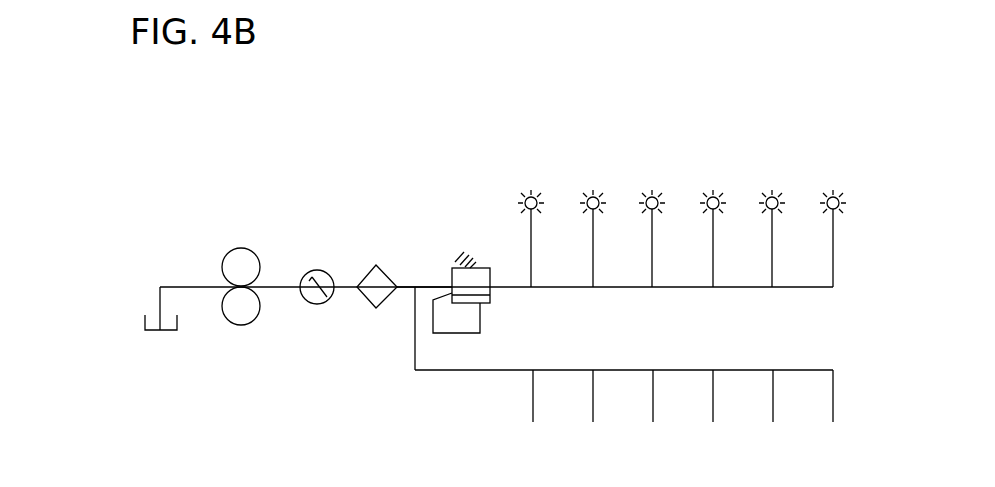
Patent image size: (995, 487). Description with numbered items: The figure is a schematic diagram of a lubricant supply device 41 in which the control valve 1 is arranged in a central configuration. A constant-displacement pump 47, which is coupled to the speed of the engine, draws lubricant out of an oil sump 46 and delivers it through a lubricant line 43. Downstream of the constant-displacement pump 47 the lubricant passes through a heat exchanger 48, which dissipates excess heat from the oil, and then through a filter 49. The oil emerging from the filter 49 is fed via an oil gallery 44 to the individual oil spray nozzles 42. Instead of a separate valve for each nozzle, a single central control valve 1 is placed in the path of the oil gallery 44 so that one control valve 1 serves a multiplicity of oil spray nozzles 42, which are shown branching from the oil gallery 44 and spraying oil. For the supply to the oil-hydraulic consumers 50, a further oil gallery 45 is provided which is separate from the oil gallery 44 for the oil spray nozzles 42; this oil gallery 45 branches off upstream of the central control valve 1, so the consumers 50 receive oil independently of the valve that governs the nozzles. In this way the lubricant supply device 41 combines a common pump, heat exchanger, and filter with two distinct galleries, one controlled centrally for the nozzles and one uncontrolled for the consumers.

The control valve 1 is at (450, 270).
The lubricant supply device 41 is at (182, 128).
The oil spray nozzles 42 is at (827, 210).
The lubricant line 43 is at (411, 285).
The oil gallery 44 is at (779, 300).
The oil gallery 45 is at (809, 352).
The oil sump 46 is at (165, 335).
The constant-displacement pump 47 is at (229, 252).
The heat exchanger 48 is at (307, 272).
The filter 49 is at (366, 270).
The oil-hydraulic consumers 50 is at (533, 398).